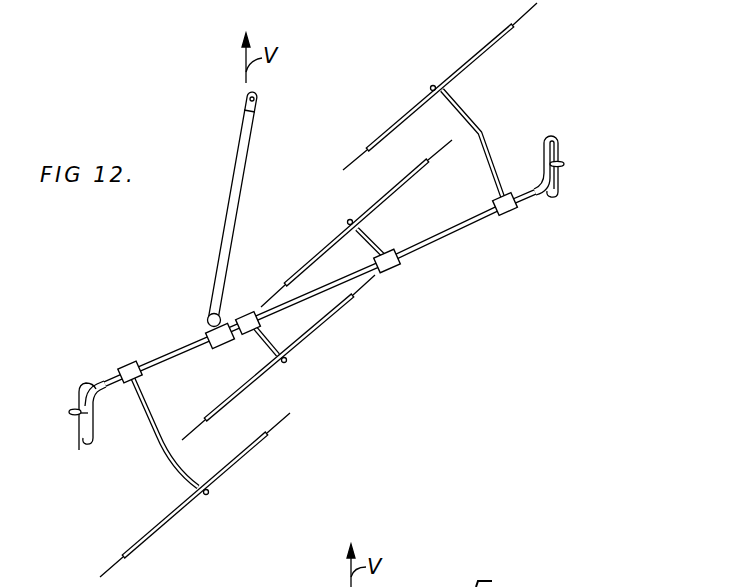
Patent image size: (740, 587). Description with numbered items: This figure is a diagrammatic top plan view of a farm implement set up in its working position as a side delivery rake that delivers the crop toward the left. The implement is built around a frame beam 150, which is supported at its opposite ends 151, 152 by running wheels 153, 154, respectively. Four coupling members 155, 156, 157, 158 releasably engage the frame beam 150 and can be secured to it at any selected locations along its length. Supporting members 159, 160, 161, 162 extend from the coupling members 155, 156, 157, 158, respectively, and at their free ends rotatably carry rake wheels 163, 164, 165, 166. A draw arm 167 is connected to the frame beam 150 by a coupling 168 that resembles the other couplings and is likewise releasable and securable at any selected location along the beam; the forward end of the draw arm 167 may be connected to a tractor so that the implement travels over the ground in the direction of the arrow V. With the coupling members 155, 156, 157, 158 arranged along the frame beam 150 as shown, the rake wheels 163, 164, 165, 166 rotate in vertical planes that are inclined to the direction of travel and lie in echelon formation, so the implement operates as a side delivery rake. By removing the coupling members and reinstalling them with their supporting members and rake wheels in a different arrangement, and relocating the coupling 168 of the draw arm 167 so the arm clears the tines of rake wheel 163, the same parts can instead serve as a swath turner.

The frame beam 150 is at (447, 231).
The end of frame beam 151 is at (540, 197).
The end of frame beam 152 is at (100, 398).
The running wheel 153 is at (559, 146).
The running wheel 154 is at (77, 443).
The coupling member 155 is at (509, 208).
The coupling member 156 is at (391, 268).
The coupling member 157 is at (248, 314).
The coupling member 158 is at (125, 356).
The supporting member 159 is at (478, 140).
The supporting member 160 is at (368, 233).
The supporting member 161 is at (263, 340).
The supporting member 162 is at (156, 437).
The rake wheel 163 is at (392, 126).
The rake wheel 164 is at (305, 264).
The rake wheel 165 is at (318, 323).
The rake wheel 166 is at (259, 437).
The draw arm 167 is at (224, 229).
The coupling 168 is at (207, 332).